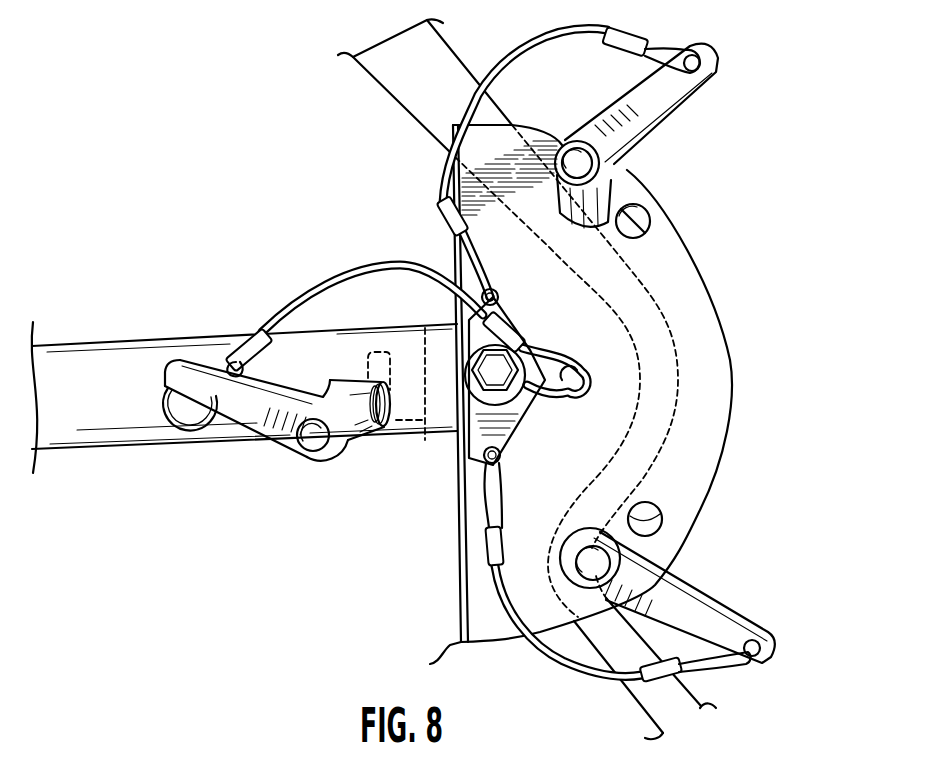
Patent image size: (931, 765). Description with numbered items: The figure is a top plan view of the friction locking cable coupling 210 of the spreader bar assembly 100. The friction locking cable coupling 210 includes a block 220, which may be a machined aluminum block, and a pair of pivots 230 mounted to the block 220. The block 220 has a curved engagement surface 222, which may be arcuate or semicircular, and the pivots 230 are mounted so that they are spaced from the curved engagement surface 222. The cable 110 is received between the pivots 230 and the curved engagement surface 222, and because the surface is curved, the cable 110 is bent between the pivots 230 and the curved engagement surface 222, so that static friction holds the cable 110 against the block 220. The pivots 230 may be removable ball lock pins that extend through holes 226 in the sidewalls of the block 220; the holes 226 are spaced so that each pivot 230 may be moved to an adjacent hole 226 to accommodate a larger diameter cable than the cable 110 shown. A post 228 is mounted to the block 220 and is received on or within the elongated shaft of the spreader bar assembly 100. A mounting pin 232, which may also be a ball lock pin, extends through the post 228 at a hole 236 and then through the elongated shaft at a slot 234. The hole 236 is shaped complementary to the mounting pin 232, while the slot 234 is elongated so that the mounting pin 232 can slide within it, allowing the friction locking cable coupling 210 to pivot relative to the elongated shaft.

The spreader bar assembly 100 is at (203, 85).
The cable 110 is at (430, 57).
The friction locking cable coupling 210 is at (460, 643).
The block 220 is at (685, 303).
The curved engagement surface 222 is at (642, 429).
The holes 226 is at (652, 207).
The post 228 is at (83, 452).
The pivots 230 is at (703, 63).
The mounting pin 232 is at (313, 440).
The slot 234 is at (368, 357).
The hole 236 is at (380, 412).